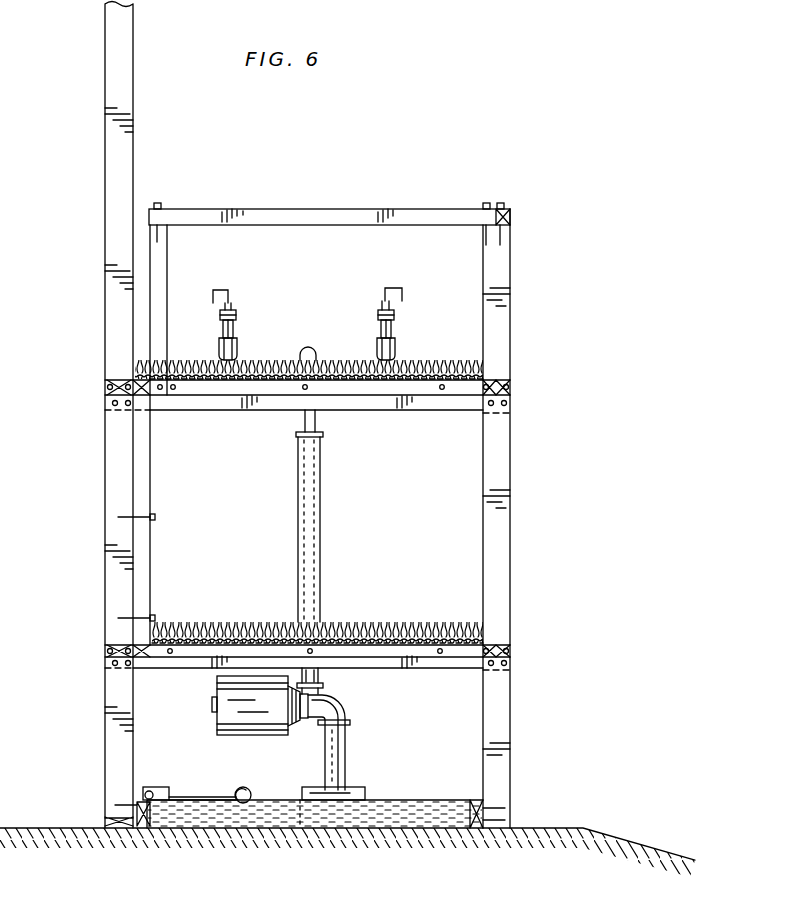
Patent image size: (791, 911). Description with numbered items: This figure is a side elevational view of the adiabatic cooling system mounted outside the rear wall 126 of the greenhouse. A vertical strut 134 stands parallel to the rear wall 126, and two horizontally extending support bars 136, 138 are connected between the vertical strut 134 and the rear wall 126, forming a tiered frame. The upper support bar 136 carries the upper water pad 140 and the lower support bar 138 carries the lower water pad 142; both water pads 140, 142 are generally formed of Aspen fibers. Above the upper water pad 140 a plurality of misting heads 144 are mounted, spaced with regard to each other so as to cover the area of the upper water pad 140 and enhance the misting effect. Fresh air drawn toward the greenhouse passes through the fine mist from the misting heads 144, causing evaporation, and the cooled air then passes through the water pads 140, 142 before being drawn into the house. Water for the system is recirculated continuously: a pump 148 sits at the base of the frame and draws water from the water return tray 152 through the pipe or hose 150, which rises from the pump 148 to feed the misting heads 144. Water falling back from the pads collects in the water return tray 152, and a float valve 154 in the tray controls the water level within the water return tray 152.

The rear wall 126 is at (117, 452).
The vertical strut 134 is at (500, 465).
The support bar 136 is at (367, 407).
The support bar 138 is at (375, 669).
The water pad 140 is at (340, 360).
The water pad 142 is at (397, 629).
The misting heads 144 is at (236, 313).
The pump 148 is at (248, 727).
The pipe or hose 150 is at (298, 553).
The water return tray 152 is at (415, 810).
The float valve 154 is at (147, 787).